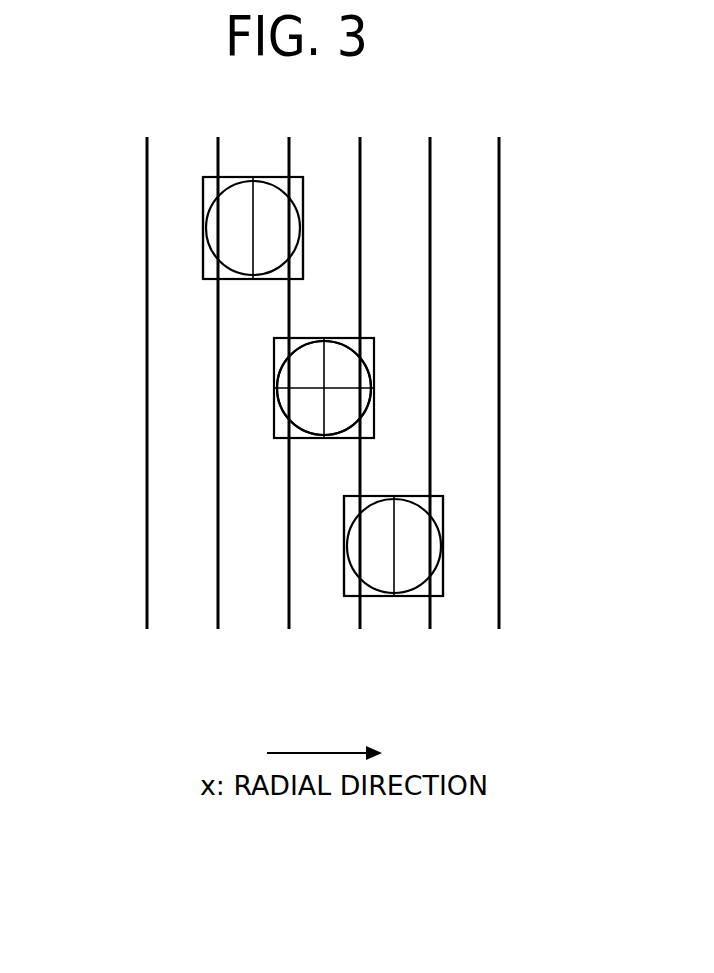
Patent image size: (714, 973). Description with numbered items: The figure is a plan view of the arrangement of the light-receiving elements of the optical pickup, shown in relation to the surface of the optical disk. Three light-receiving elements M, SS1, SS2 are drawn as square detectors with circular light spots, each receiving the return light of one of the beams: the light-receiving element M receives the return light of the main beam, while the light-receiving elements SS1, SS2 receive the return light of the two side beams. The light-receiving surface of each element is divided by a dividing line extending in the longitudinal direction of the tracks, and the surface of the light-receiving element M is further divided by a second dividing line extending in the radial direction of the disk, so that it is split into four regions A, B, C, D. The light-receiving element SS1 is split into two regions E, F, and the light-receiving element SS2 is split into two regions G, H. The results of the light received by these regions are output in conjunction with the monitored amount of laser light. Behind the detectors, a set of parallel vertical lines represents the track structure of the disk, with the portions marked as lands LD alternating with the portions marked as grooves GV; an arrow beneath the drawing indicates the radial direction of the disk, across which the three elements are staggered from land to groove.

The light-receiving element SS1 is at (203, 194).
The light-receiving element SS2 is at (445, 500).
The region E is at (207, 268).
The region F is at (298, 265).
The region A is at (352, 343).
The region B is at (281, 360).
The region C is at (281, 423).
The region D is at (367, 425).
The light-receiving element M is at (319, 438).
The region G is at (351, 588).
The region H is at (437, 578).
The groove GV is at (182, 622).
The land LD is at (257, 622).